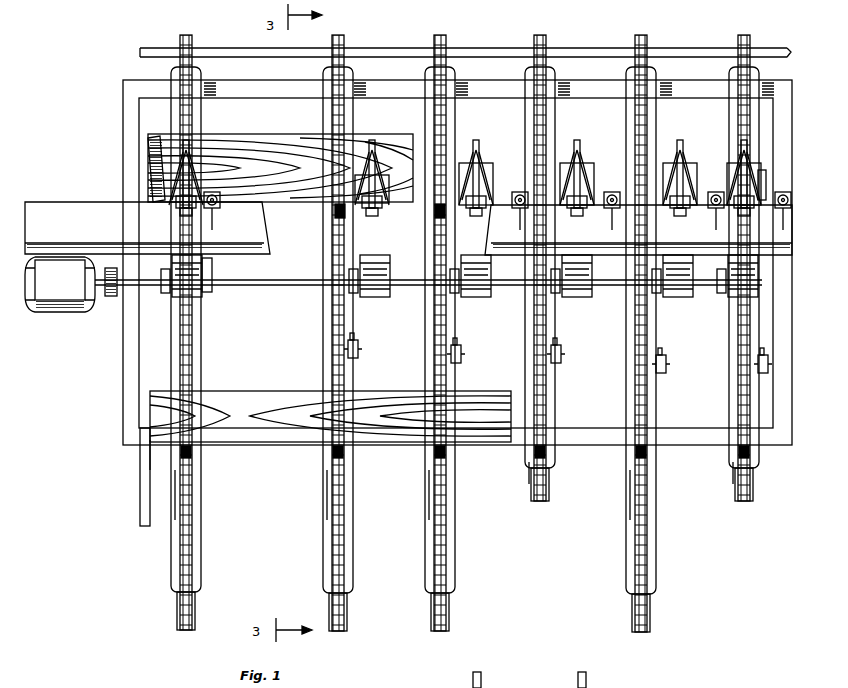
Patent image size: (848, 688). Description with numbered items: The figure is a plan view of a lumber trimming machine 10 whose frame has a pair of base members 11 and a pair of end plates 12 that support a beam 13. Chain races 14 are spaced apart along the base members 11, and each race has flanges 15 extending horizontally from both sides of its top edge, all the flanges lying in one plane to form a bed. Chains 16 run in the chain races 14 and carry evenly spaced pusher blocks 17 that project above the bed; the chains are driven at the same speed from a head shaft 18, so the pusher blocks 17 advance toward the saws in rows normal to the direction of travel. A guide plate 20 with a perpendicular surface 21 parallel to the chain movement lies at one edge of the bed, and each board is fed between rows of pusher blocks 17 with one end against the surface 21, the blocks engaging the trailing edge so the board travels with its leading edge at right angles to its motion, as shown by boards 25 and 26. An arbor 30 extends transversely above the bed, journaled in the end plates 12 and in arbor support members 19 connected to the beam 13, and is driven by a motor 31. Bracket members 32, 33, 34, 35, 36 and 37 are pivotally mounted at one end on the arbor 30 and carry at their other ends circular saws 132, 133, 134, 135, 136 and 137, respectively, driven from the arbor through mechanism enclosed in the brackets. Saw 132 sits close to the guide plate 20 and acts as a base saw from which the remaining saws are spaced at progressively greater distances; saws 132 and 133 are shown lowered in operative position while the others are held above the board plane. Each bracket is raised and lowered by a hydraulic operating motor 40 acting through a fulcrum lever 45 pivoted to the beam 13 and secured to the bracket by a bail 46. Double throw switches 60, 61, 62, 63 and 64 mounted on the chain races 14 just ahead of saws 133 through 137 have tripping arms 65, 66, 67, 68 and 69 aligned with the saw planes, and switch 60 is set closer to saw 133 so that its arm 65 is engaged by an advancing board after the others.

The lumber trimming machine 10 is at (122, 428).
The base members 11 is at (294, 86).
The end plates 12 is at (132, 151).
The beam 13 is at (60, 210).
The chain races 14 is at (178, 626).
The flanges 15 is at (176, 498).
The chains 16 is at (193, 524).
The pusher blocks 17 is at (334, 208).
The head shaft 18 is at (362, 53).
The arbor support members 19 is at (214, 266).
The guide plate 20 is at (146, 468).
The perpendicular surface 21 is at (152, 478).
The board 25 is at (292, 143).
The board 26 is at (290, 441).
The arbor 30 is at (298, 276).
The motor 31 is at (62, 306).
The bracket member 32 is at (198, 295).
The bracket member 33 is at (380, 297).
The bracket member 34 is at (484, 297).
The bracket member 35 is at (584, 297).
The bracket member 36 is at (690, 297).
The bracket member 37 is at (738, 292).
The hydraulic operating motor 40 is at (485, 198).
The fulcrum lever 45 is at (486, 172).
The bail 46 is at (480, 155).
The double throw switch 60 is at (356, 360).
The double throw switch 61 is at (460, 364).
The double throw switch 62 is at (558, 364).
The double throw switch 63 is at (664, 373).
The double throw switch 64 is at (770, 372).
The tripping arm 65 is at (358, 352).
The tripping arm 66 is at (464, 358).
The tripping arm 67 is at (564, 358).
The tripping arm 68 is at (670, 364).
The tripping arm 69 is at (772, 364).
The circular saw 132 is at (170, 150).
The circular saw 133 is at (355, 150).
The circular saw 134 is at (462, 150).
The circular saw 135 is at (565, 150).
The circular saw 136 is at (662, 150).
The circular saw 137 is at (770, 140).